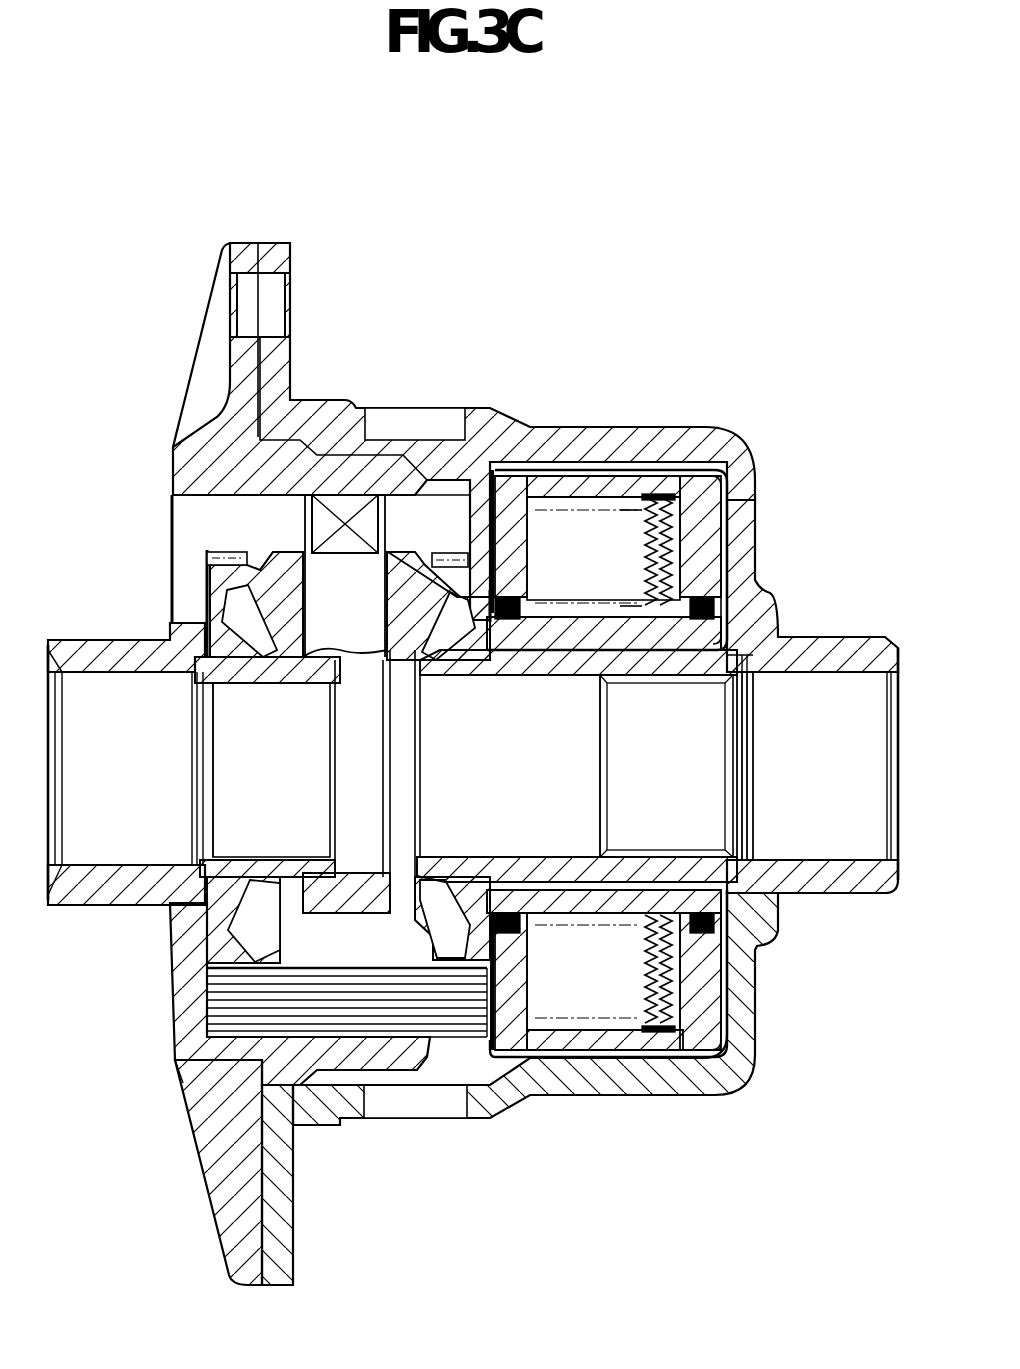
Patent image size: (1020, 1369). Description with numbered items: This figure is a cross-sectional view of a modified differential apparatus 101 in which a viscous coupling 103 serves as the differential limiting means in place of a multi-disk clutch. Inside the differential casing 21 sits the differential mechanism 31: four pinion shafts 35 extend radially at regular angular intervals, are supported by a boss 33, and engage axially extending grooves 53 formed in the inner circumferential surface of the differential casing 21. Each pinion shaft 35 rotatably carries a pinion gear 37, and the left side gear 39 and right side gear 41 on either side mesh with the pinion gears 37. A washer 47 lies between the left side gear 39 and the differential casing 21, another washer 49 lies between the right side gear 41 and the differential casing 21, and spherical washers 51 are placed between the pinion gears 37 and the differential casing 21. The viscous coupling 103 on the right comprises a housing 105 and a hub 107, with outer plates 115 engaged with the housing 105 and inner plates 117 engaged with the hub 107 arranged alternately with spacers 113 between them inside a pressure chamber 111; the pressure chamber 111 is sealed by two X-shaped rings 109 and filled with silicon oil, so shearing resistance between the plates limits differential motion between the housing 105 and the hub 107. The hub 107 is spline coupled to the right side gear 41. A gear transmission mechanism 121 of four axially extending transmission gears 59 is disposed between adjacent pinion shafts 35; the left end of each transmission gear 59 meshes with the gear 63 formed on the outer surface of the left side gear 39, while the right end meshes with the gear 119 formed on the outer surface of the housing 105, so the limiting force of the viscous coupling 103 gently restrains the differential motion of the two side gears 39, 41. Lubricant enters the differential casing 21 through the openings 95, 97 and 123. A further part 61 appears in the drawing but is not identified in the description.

The differential casing 21 is at (258, 242).
The differential mechanism 31 is at (344, 398).
The boss 33 is at (360, 875).
The pinion shafts 35 is at (324, 603).
The pinion gears 37 is at (315, 660).
The left side gear 39 is at (255, 684).
The right side gear 41 is at (440, 668).
The washer 47 is at (215, 870).
The washer 49 is at (742, 862).
The spherical washers 51 is at (300, 545).
The axially extending grooves 53 is at (240, 508).
The transmission gears 59 is at (350, 972).
The flange 61 is at (235, 1040).
The gear 63 is at (205, 560).
The opening 95 is at (170, 496).
The opening 97 is at (458, 1120).
The differential apparatus 101 is at (731, 332).
The viscous coupling 103 is at (607, 426).
The housing 105 is at (553, 470).
The hub 107 is at (555, 652).
The X-shaped rings 109 is at (507, 622).
The pressure chamber 111 is at (533, 582).
The spacers 113 is at (652, 497).
The outer plates 115 is at (640, 509).
The inner plates 117 is at (625, 608).
The gear 119 is at (440, 550).
The gear transmission mechanism 121 is at (200, 1069).
The opening 123 is at (757, 500).